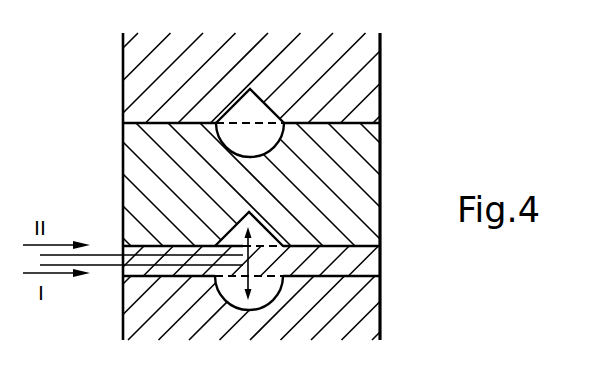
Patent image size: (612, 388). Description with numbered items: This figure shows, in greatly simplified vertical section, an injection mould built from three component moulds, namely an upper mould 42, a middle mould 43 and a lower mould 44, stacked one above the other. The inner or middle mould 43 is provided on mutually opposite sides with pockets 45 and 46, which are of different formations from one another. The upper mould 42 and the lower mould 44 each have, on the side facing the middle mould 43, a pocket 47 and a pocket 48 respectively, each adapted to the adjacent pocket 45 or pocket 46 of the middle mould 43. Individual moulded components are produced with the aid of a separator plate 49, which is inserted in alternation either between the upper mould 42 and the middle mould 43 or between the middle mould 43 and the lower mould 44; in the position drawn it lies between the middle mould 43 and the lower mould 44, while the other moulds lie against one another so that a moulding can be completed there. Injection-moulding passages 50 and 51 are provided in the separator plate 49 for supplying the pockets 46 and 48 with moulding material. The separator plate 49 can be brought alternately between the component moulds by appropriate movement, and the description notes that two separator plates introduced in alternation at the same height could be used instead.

The upper component mould 42 is at (345, 68).
The middle component mould 43 is at (337, 178).
The lower component mould 44 is at (340, 328).
The pocket 45 is at (146, 136).
The pocket 46 is at (243, 224).
The pocket 47 is at (243, 105).
The pocket 48 is at (230, 292).
The separator plate 49 is at (352, 263).
The injection-moulding passage 50 is at (106, 255).
The injection-moulding passage 51 is at (104, 265).